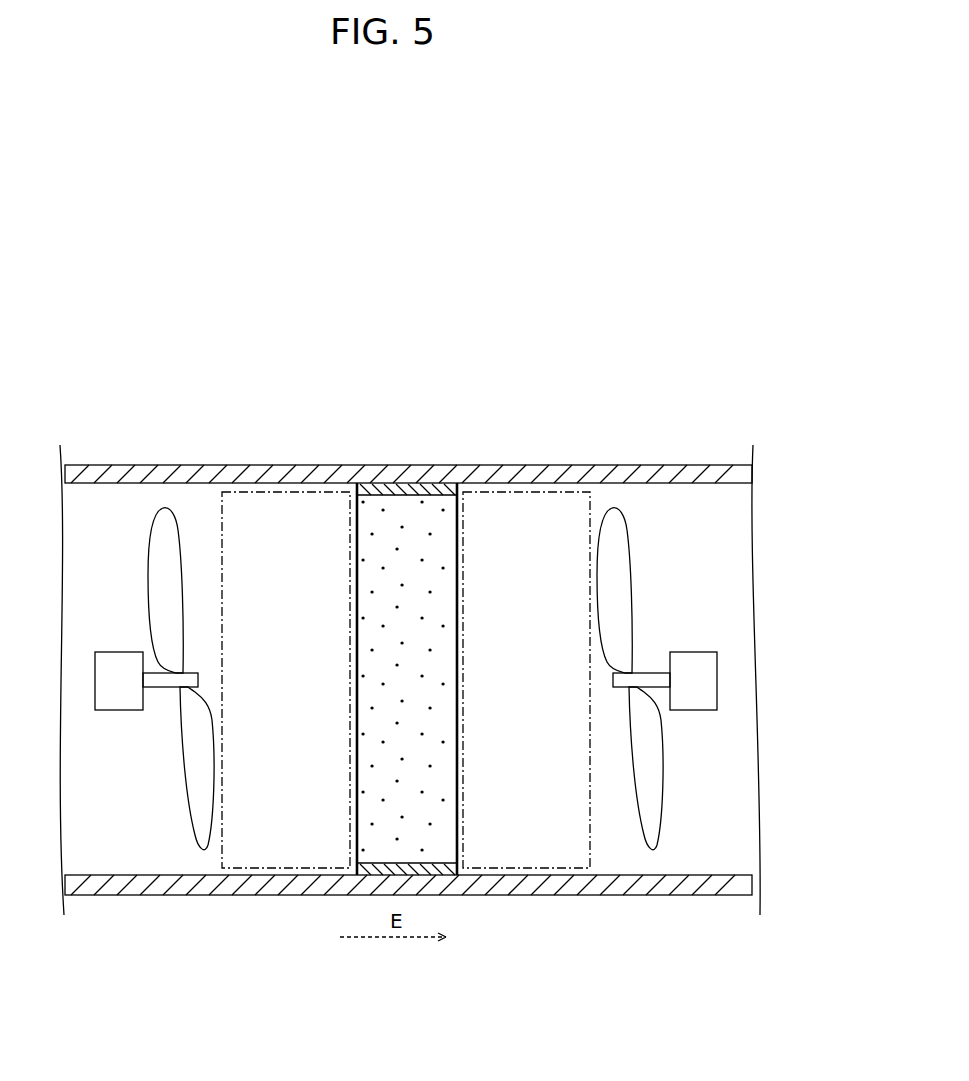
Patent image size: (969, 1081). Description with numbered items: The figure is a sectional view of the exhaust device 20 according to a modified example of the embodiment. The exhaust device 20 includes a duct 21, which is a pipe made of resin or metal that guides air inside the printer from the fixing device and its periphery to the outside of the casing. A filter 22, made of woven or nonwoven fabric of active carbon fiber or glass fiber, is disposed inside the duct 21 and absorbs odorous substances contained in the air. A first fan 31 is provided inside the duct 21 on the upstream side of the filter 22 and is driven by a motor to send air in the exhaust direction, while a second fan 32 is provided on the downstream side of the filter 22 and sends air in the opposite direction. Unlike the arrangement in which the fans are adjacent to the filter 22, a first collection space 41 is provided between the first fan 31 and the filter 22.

The exhaust device 20 is at (662, 399).
The duct 21 is at (508, 465).
The filter 22 is at (355, 506).
The first collection space 41 is at (236, 492).
The first fan 31 is at (148, 566).
The second fan 32 is at (627, 583).